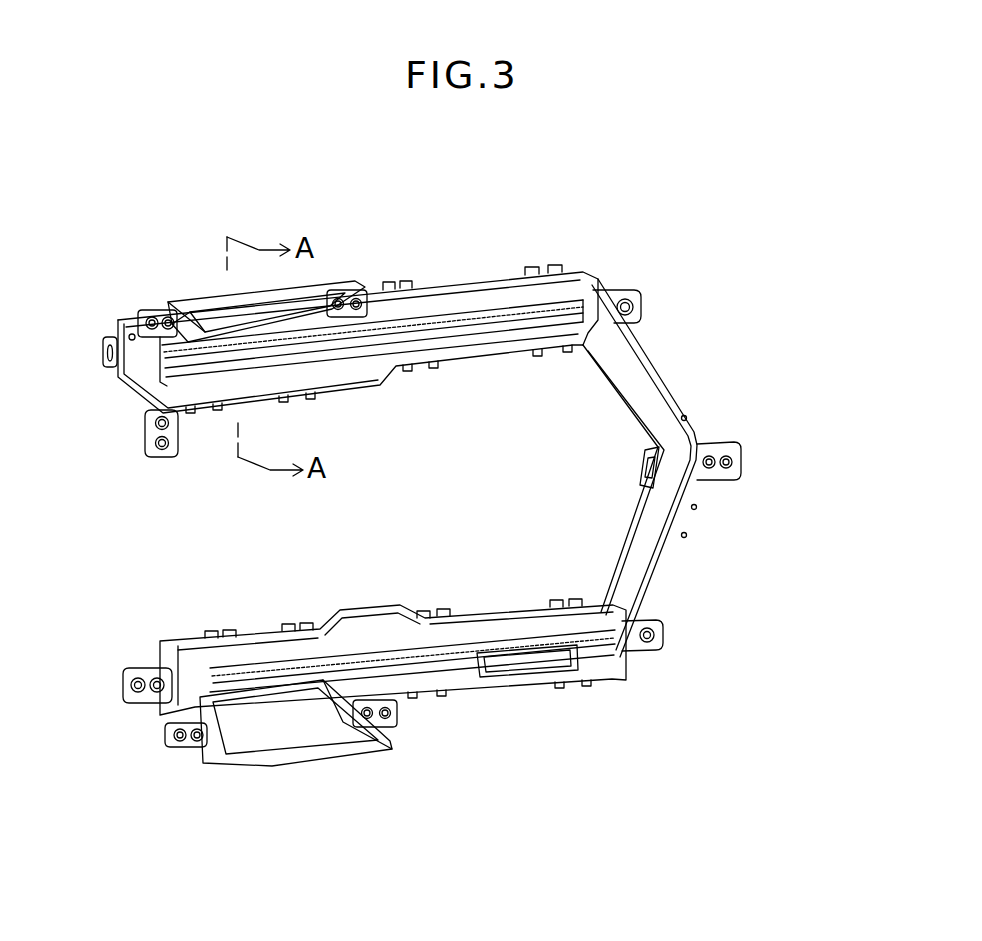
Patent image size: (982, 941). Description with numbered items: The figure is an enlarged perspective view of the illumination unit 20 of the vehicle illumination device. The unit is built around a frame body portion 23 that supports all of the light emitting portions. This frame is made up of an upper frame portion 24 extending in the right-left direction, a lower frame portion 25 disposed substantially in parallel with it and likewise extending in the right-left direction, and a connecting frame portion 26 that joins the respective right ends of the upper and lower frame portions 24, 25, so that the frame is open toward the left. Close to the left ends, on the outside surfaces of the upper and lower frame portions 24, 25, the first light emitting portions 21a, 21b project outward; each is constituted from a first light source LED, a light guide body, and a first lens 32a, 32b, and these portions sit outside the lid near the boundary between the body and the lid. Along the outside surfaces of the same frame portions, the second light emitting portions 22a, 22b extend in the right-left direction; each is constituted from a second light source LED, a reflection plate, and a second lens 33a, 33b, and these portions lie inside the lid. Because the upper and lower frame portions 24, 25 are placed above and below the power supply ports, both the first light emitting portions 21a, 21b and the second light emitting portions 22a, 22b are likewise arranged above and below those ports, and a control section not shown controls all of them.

The illumination unit 20 is at (97, 162).
The first light emitting portion 21a is at (258, 276).
The first lens 32a is at (222, 307).
The second light emitting portion 22a is at (371, 284).
The second lens 33a is at (460, 342).
The first light emitting portion 21b is at (298, 764).
The first lens 32b is at (293, 759).
The second light emitting portion 22b is at (412, 722).
The second lens 33b is at (398, 648).
The frame body portion 23 is at (835, 350).
The upper frame portion 24 is at (513, 297).
The lower frame portion 25 is at (460, 673).
The connecting frame portion 26 is at (652, 403).